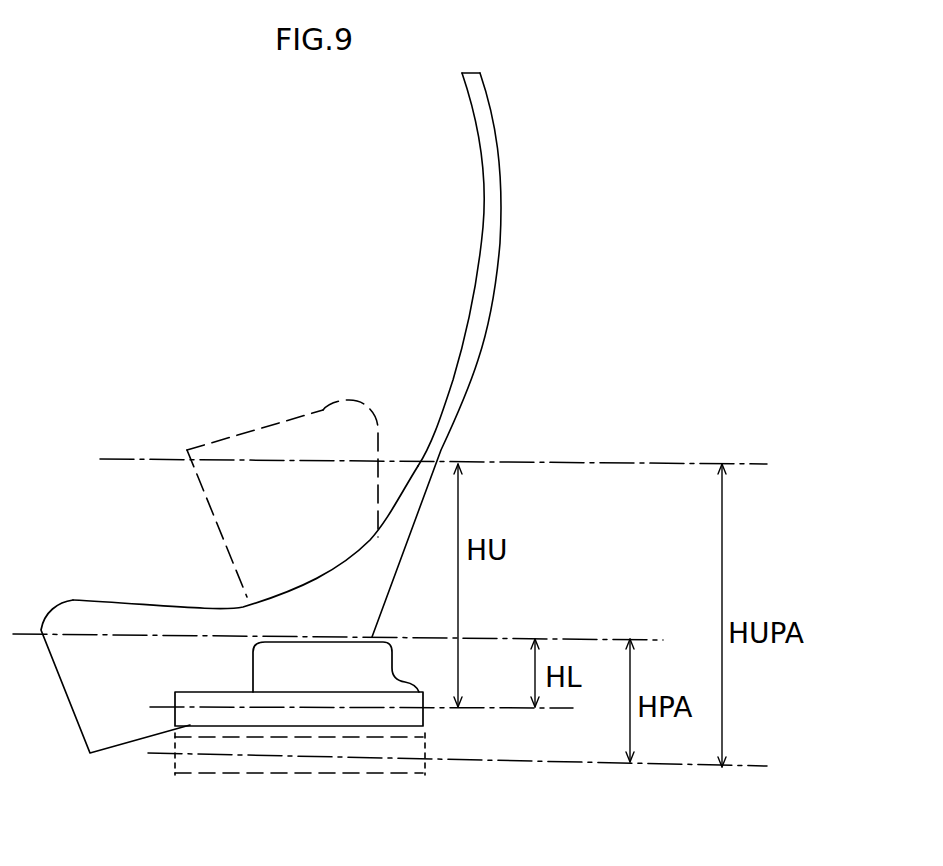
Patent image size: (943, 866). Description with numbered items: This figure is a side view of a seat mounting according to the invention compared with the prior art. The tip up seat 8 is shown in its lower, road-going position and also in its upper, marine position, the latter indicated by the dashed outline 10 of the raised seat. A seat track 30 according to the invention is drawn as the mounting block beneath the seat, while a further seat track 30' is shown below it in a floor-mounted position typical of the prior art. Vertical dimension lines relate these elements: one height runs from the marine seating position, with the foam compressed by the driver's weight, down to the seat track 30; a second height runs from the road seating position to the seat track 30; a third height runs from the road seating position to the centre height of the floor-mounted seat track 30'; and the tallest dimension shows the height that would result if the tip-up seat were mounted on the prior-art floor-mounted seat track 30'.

The tip up seat 8 is at (136, 687).
The boot upper toe portion 10 is at (362, 447).
The seat track 30 is at (339, 691).
The further seat track 30' is at (344, 769).